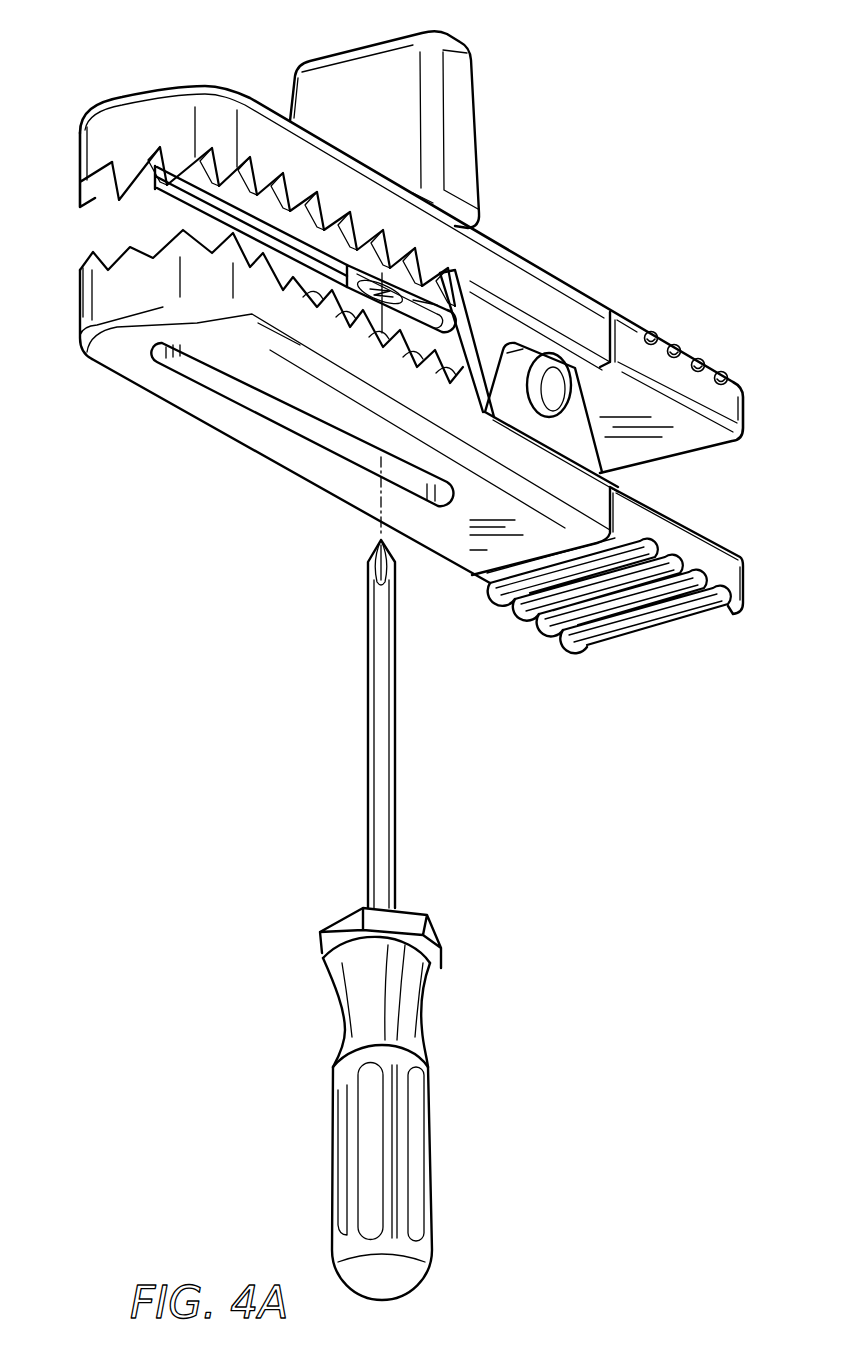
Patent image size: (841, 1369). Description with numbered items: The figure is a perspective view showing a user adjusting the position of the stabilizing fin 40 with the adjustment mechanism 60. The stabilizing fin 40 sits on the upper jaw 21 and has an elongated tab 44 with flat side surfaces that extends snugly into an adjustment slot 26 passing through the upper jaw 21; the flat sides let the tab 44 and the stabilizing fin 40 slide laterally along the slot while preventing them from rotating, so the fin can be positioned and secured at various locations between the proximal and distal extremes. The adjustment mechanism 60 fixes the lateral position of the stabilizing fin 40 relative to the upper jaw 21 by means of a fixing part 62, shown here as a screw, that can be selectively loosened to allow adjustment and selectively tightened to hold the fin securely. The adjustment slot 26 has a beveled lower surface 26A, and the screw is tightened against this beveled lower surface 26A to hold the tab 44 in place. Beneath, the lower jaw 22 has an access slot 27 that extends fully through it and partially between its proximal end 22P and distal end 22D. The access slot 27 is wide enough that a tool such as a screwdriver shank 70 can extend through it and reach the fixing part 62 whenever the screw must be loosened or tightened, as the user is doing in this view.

The upper jaw 21 is at (148, 92).
The stabilizing fin 40 is at (362, 45).
The adjustment slot 26 is at (178, 208).
The beveled lower surface 26A is at (273, 240).
The lower jaw 22 is at (130, 360).
The distal end 22D is at (82, 353).
The proximal end 22P is at (523, 560).
The access slot 27 is at (325, 458).
The tab 44 is at (350, 248).
The adjustment mechanism 60 is at (529, 340).
The fixing part 62 is at (435, 303).
The screwdriver shank 70 is at (395, 822).